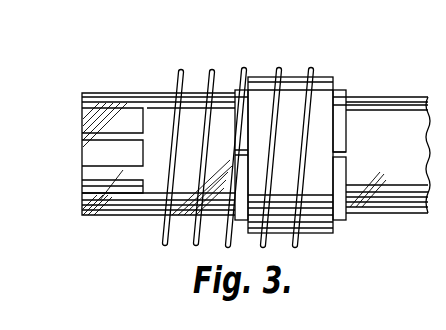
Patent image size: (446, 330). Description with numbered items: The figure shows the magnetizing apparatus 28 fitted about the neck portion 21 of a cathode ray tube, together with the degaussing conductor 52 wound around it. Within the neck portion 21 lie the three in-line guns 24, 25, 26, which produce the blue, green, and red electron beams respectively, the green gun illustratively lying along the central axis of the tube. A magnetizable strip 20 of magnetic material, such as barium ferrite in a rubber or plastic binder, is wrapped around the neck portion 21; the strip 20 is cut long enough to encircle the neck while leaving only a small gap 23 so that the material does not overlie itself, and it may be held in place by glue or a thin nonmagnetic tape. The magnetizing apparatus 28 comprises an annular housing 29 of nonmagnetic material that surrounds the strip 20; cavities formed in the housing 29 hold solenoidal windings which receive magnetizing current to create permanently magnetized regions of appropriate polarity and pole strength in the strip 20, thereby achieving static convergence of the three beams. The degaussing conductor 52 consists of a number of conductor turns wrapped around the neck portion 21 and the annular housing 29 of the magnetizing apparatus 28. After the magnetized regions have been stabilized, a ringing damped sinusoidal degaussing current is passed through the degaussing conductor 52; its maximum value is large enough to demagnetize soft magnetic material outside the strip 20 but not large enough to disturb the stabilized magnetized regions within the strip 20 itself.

The magnetizable strip 20 is at (339, 125).
The neck portion 21 is at (386, 218).
The gap 23 is at (341, 155).
The in-line gun 24 is at (93, 190).
The in-line gun 25 is at (93, 155).
The in-line gun 26 is at (90, 118).
The magnetizing apparatus 28 is at (262, 50).
The annular housing 29 is at (325, 77).
The degaussing conductor 52 is at (177, 93).